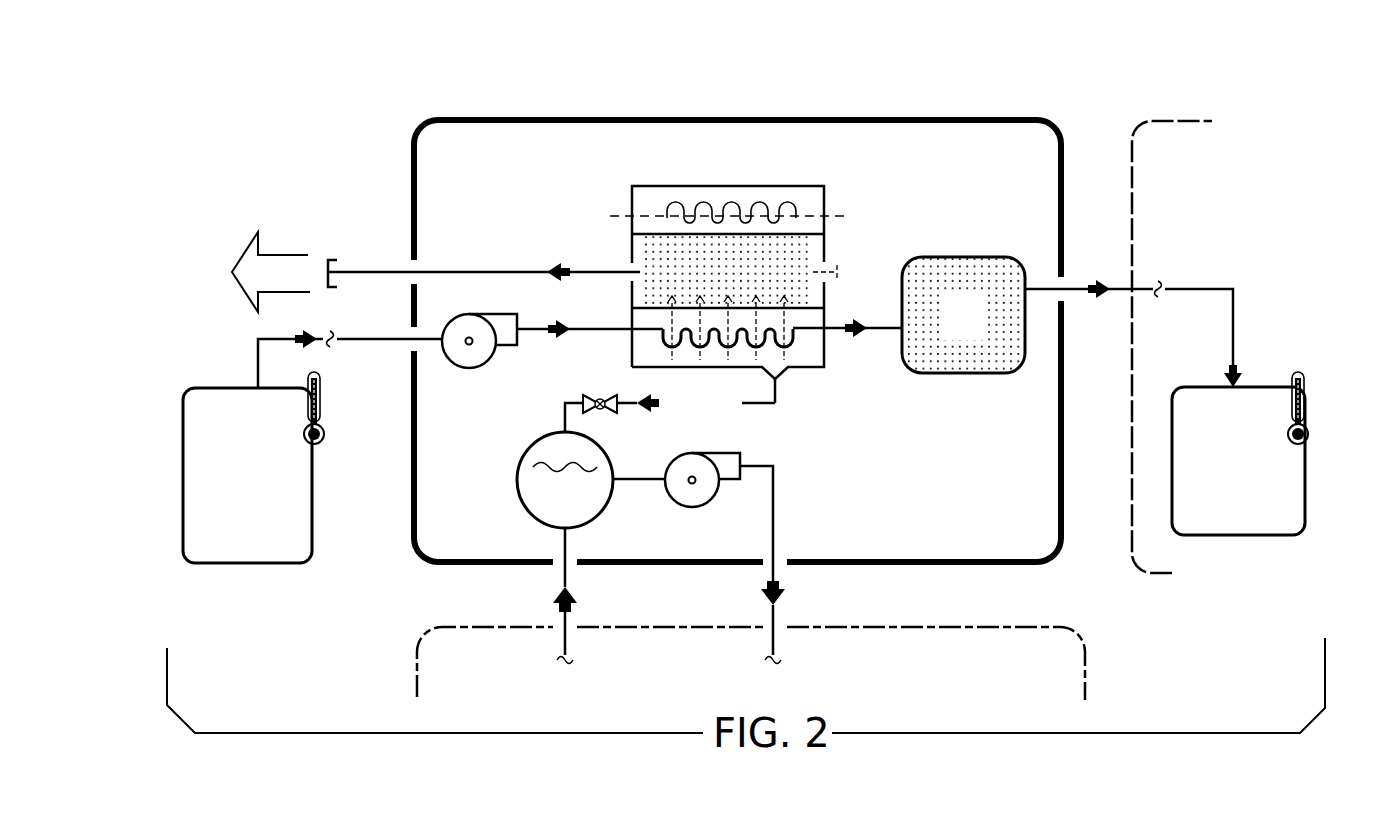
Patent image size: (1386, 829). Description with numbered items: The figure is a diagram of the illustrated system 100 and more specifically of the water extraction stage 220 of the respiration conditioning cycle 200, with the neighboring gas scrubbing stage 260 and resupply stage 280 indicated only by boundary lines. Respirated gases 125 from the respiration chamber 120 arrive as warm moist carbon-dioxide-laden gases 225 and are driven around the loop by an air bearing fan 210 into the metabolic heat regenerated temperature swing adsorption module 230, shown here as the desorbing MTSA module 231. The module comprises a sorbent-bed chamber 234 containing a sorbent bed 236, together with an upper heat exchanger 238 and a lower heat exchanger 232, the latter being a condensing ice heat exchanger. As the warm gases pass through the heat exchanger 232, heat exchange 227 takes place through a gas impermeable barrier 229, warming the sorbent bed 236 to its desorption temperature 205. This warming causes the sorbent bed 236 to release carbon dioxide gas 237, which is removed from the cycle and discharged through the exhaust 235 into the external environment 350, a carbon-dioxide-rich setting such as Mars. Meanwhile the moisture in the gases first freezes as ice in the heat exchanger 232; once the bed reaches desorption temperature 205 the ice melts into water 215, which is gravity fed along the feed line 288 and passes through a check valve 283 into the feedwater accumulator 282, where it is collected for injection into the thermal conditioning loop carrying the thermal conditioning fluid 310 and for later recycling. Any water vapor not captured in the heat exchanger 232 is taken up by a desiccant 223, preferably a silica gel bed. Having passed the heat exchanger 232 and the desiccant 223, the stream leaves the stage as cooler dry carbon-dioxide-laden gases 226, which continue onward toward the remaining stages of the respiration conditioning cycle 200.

The system 100 is at (383, 90).
The respiration conditioning cycle 200 is at (518, 89).
The water extraction stage 220 is at (878, 117).
The metabolic heat regenerated temperature swing adsorption module 230 is at (845, 178).
The desorbing MTSA module 231 is at (729, 163).
The heat exchanger 238 is at (667, 203).
The sorbent-bed chamber 234 is at (645, 247).
The sorbent bed 236 is at (800, 262).
The desorption temperature 205 is at (737, 282).
The exhaust 235 is at (453, 272).
The carbon dioxide gas 237 is at (278, 255).
The external environment 350 is at (217, 285).
The air bearing fan 210 is at (488, 314).
The heat exchanger 232 is at (665, 338).
The gas impermeable barrier 229 is at (802, 313).
The heat exchange 227 is at (788, 353).
The feed line 288 is at (757, 405).
The check valve 283 is at (583, 399).
The feedwater accumulator 282 is at (554, 537).
The water 215 is at (543, 469).
The thermal conditioning fluid 310 is at (548, 498).
The desiccant 223 is at (932, 373).
The warm moist carbon-dioxide-laden gases 225 is at (313, 492).
The respirated gases 125 is at (285, 475).
The respiration chamber 120 is at (231, 549).
The cooler dry carbon-dioxide-laden gases 226 is at (1305, 492).
The gas scrubbing stage 260 is at (1183, 121).
The resupply stage 280 is at (1085, 683).